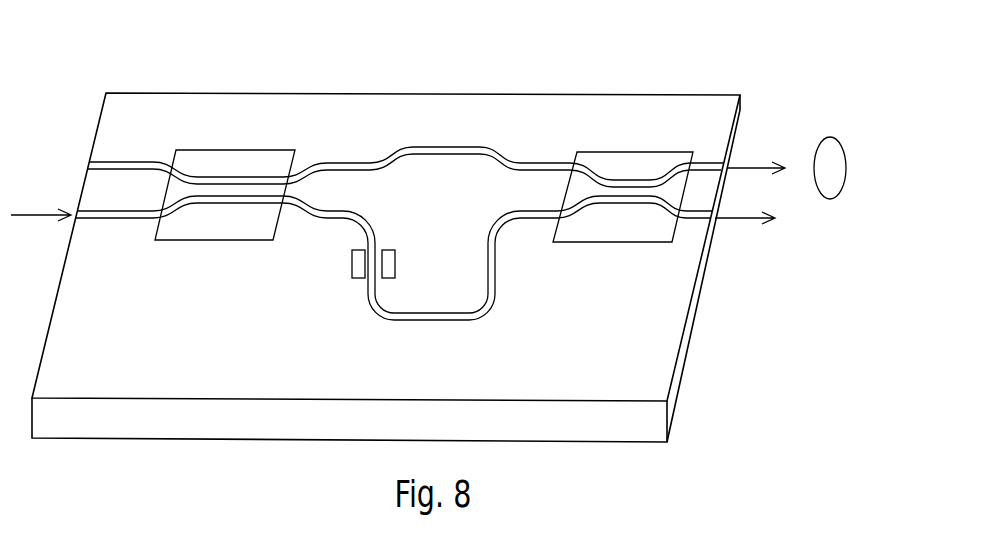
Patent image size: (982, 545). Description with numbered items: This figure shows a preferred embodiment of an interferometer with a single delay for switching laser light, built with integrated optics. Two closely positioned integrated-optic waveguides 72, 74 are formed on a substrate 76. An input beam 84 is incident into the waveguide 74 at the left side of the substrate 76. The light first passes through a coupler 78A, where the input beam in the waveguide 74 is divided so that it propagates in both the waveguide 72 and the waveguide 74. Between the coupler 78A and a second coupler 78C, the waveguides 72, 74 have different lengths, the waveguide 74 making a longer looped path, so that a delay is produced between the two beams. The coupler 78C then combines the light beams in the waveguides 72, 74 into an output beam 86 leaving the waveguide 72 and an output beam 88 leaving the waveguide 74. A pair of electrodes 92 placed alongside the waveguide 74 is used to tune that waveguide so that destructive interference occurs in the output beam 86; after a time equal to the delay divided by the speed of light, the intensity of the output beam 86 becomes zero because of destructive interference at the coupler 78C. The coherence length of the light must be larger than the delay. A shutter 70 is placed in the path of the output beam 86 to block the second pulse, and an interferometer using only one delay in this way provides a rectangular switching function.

The shutter 70 is at (840, 197).
The waveguide 72 is at (133, 160).
The waveguide 74 is at (137, 220).
The substrate 76 is at (355, 93).
The coupler 78A is at (217, 250).
The coupler 78C is at (652, 247).
The input beam 84 is at (35, 213).
The output beam 86 is at (758, 167).
The output beam 88 is at (743, 220).
The pair of electrodes 92 is at (358, 280).